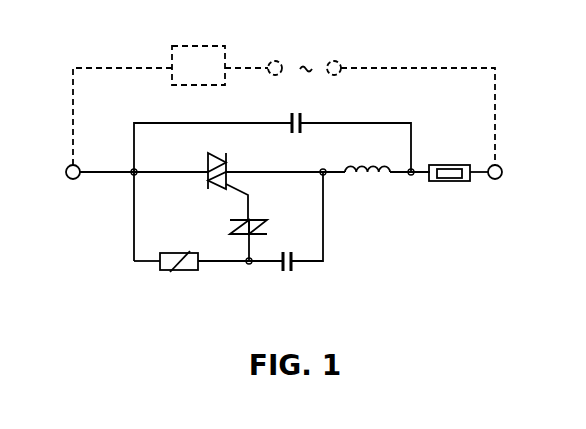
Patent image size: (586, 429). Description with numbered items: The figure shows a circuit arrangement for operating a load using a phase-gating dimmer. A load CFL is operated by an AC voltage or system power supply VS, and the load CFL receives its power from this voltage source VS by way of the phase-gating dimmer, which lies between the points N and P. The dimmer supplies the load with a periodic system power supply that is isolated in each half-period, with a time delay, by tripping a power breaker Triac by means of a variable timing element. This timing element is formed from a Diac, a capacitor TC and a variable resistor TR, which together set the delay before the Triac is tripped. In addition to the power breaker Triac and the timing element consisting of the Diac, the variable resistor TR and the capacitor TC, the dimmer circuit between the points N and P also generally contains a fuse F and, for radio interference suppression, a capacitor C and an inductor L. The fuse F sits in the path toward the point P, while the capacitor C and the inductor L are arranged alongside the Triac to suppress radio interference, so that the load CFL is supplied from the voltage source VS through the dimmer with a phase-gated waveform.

The load CFL is at (170, 93).
The AC voltage/system power supply VS is at (381, 100).
The point N is at (100, 186).
The point P is at (486, 185).
The capacitor C is at (272, 187).
The inductor L is at (367, 154).
The fuse F is at (449, 160).
The power breaker triac Triac is at (205, 177).
The diac Diac is at (224, 238).
The variable resistor TR is at (191, 274).
The capacitor TC is at (286, 235).